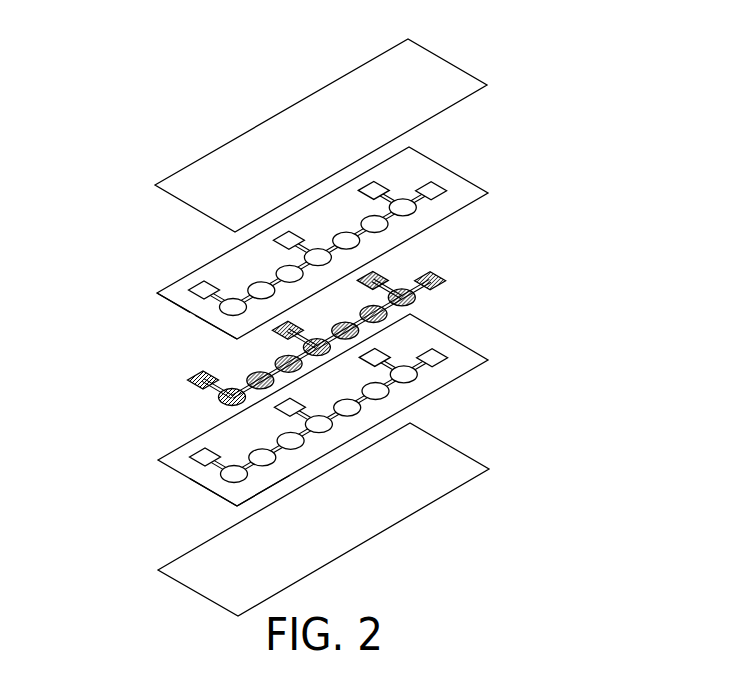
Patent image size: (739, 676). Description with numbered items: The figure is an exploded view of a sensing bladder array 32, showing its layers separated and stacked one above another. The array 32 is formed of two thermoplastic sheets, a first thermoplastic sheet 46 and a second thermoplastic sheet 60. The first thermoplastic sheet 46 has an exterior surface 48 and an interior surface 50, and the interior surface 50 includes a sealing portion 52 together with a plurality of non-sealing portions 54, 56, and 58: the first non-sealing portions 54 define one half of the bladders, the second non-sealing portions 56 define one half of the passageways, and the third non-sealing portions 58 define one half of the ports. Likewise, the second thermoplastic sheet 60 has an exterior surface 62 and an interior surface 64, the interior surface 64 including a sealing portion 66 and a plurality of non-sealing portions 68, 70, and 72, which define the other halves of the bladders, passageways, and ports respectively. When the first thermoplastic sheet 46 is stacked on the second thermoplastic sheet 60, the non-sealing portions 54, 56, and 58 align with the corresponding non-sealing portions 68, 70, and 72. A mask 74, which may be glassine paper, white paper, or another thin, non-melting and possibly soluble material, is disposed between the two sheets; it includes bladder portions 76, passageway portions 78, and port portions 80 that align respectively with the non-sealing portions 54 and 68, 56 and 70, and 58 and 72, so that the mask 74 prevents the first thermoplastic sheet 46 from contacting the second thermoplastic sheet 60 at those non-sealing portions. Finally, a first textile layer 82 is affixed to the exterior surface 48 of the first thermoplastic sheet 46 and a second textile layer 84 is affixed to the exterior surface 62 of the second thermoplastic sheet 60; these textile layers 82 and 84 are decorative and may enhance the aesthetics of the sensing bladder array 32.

The sensing bladder array 32 is at (176, 114).
The second textile layer 84 is at (452, 59).
The second thermoplastic sheet 60 is at (315, 239).
The exterior surface 62 is at (177, 293).
The interior surface 64 is at (173, 307).
The sealing portion 66 is at (212, 328).
The non-sealing portions 68 is at (283, 270).
The non-sealing portions 70 is at (378, 216).
The non-sealing portions 72 is at (430, 187).
The mask 74 is at (345, 314).
The bladder portions 76 is at (375, 312).
The passageway portions 78 is at (292, 358).
The port portions 80 is at (428, 276).
The first thermoplastic sheet 46 is at (326, 409).
The exterior surface 48 is at (213, 492).
The interior surface 50 is at (217, 482).
The sealing portion 52 is at (250, 485).
The non-sealing portions 54 is at (380, 390).
The non-sealing portions 56 is at (322, 428).
The non-sealing portions 58 is at (433, 357).
The first textile layer 82 is at (454, 443).